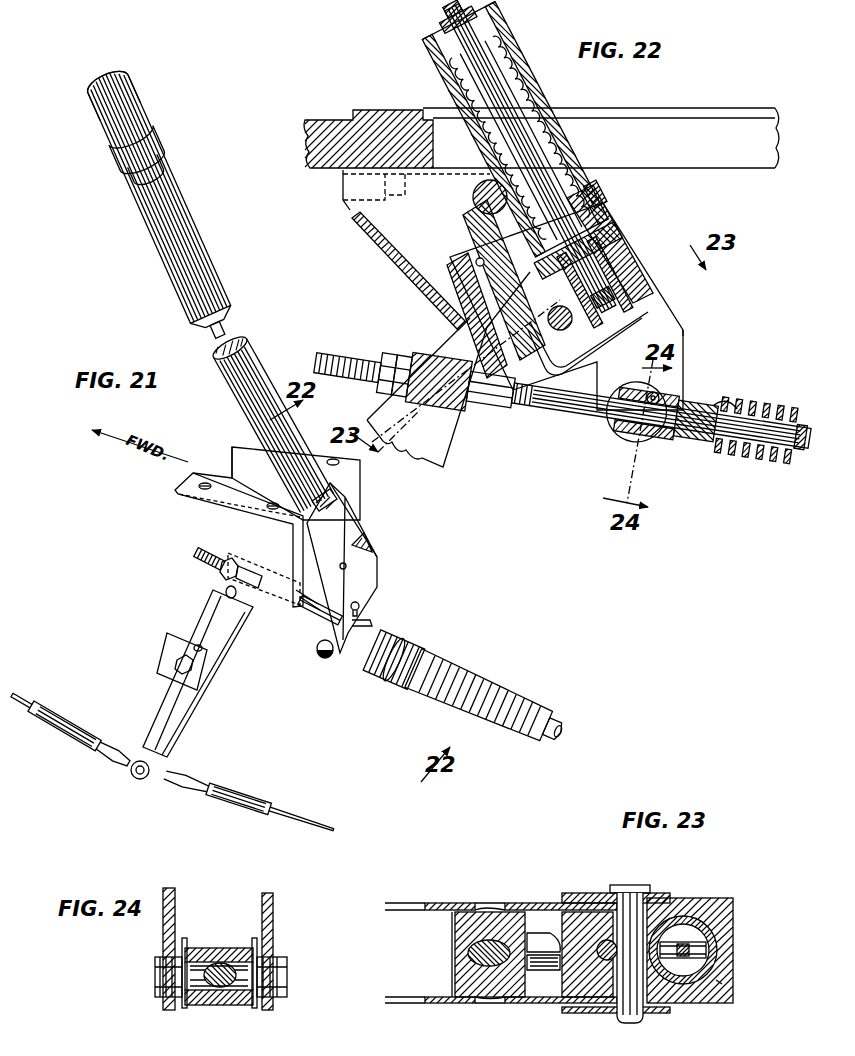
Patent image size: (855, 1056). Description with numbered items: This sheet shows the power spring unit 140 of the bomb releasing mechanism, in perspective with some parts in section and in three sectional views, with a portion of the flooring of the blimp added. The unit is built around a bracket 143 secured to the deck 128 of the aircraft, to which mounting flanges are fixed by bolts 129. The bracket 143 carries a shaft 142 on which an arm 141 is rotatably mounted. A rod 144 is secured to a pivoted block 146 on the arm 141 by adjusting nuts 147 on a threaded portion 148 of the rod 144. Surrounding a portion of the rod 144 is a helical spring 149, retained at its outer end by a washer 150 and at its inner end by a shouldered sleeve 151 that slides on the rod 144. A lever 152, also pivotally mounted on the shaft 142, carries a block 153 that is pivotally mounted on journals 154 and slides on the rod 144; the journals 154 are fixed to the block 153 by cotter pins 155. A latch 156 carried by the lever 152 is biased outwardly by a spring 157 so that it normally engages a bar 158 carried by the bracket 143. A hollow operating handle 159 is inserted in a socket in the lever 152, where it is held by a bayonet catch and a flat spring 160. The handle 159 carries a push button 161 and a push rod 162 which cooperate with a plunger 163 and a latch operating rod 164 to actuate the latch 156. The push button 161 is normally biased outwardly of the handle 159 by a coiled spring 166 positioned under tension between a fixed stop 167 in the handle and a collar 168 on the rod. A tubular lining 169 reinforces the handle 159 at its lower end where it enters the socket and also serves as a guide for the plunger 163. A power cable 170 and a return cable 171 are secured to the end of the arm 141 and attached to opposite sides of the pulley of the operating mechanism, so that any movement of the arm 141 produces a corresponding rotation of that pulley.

In FIG. 22, the deck 128 is at (356, 136).
In FIG. 22, the bolts 129 is at (343, 198).
In FIG. 21, the power spring unit 140 is at (185, 532).
In FIG. 22, the power spring unit 140 is at (662, 220).
In FIG. 21, the arm 141 is at (166, 718).
In FIG. 22, the arm 141 is at (466, 348).
In FIG. 23, the arm 141 is at (538, 902).
In FIG. 21, the shaft 142 is at (300, 596).
In FIG. 22, the shaft 142 is at (597, 345).
In FIG. 23, the shaft 142 is at (636, 885).
In FIG. 21, the bracket 143 is at (196, 490).
In FIG. 22, the bracket 143 is at (420, 252).
In FIG. 23, the bracket 143 is at (598, 892).
In FIG. 21, the rod 144 is at (306, 616).
In FIG. 22, the rod 144 is at (578, 420).
In FIG. 23, the rod 144 is at (470, 953).
In FIG. 24, the rod 144 is at (226, 993).
In FIG. 21, the pivoted block 146 is at (245, 575).
In FIG. 22, the pivoted block 146 is at (428, 412).
In FIG. 23, the pivoted block 146 is at (472, 910).
In FIG. 21, the adjusting nuts 147 is at (223, 570).
In FIG. 22, the adjusting nuts 147 is at (406, 370).
In FIG. 23, the adjusting nuts 147 is at (545, 972).
In FIG. 21, the threaded portion 148 is at (197, 555).
In FIG. 22, the threaded portion 148 is at (352, 362).
In FIG. 21, the helical spring 149 is at (482, 678).
In FIG. 22, the helical spring 149 is at (762, 486).
In FIG. 21, the washer 150 is at (550, 712).
In FIG. 21, the shouldered sleeve 151 is at (378, 664).
In FIG. 22, the shouldered sleeve 151 is at (722, 408).
In FIG. 21, the lever 152 is at (378, 590).
In FIG. 22, the lever 152 is at (688, 364).
In FIG. 23, the lever 152 is at (700, 900).
In FIG. 24, the lever 152 is at (270, 905).
In FIG. 21, the block 153 is at (374, 622).
In FIG. 22, the block 153 is at (665, 462).
In FIG. 24, the block 153 is at (212, 946).
In FIG. 21, the journals 154 is at (322, 654).
In FIG. 22, the journals 154 is at (626, 449).
In FIG. 24, the journals 154 is at (158, 977).
In FIG. 21, the cotter pins 155 is at (360, 606).
In FIG. 22, the cotter pins 155 is at (660, 398).
In FIG. 24, the cotter pins 155 is at (182, 943).
In FIG. 22, the latch 156 is at (470, 232).
In FIG. 22, the spring 157 is at (480, 282).
In FIG. 22, the bar 158 is at (476, 192).
In FIG. 21, the hollow operating handle 159 is at (212, 254).
In FIG. 23, the hollow operating handle 159 is at (710, 940).
In FIG. 21, the flat spring 160 is at (338, 508).
In FIG. 22, the flat spring 160 is at (606, 197).
In FIG. 21, the push button 161 is at (104, 86).
In FIG. 21, the push rod 162 is at (130, 138).
In FIG. 22, the push rod 162 is at (482, 86).
In FIG. 22, the plunger 163 is at (625, 252).
In FIG. 23, the plunger 163 is at (708, 958).
In FIG. 21, the latch operating rod 164 is at (347, 566).
In FIG. 22, the latch operating rod 164 is at (648, 322).
In FIG. 23, the latch operating rod 164 is at (716, 980).
In FIG. 22, the coiled spring 166 is at (505, 96).
In FIG. 22, the fixed stop 167 is at (600, 216).
In FIG. 22, the collar 168 is at (440, 42).
In FIG. 22, the tubular lining 169 is at (640, 292).
In FIG. 23, the tubular lining 169 is at (690, 950).
In FIG. 21, the power cable 170 is at (24, 702).
In FIG. 21, the return cable 171 is at (282, 812).